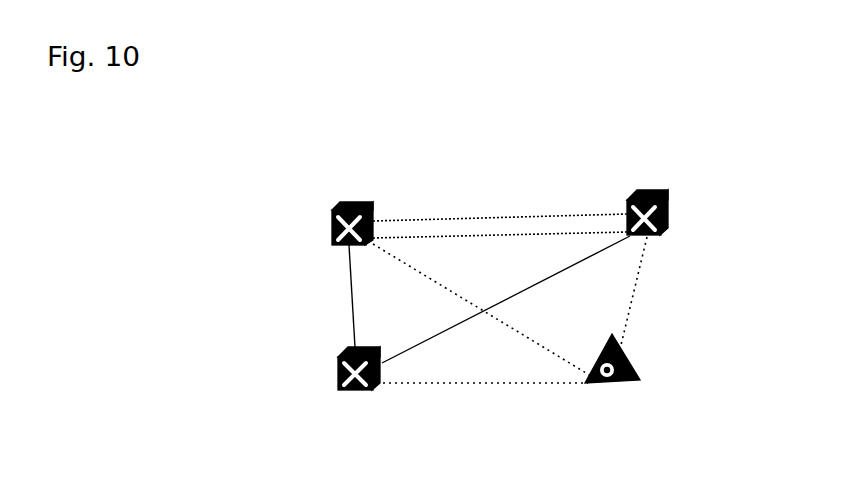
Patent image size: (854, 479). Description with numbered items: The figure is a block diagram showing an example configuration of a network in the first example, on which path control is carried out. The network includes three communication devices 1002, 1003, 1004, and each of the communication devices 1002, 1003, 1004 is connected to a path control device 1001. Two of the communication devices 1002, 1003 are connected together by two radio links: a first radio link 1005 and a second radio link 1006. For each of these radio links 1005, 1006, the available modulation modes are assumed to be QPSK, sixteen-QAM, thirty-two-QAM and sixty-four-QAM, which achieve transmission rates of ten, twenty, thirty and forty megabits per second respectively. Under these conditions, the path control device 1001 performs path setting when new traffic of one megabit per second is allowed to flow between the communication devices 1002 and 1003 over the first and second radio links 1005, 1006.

The path control device 1001 is at (640, 373).
The communication device 1002 is at (332, 222).
The communication device 1003 is at (668, 212).
The communication device 1004 is at (338, 370).
The radio link e1 1005 is at (510, 215).
The radio link e2 1006 is at (492, 237).